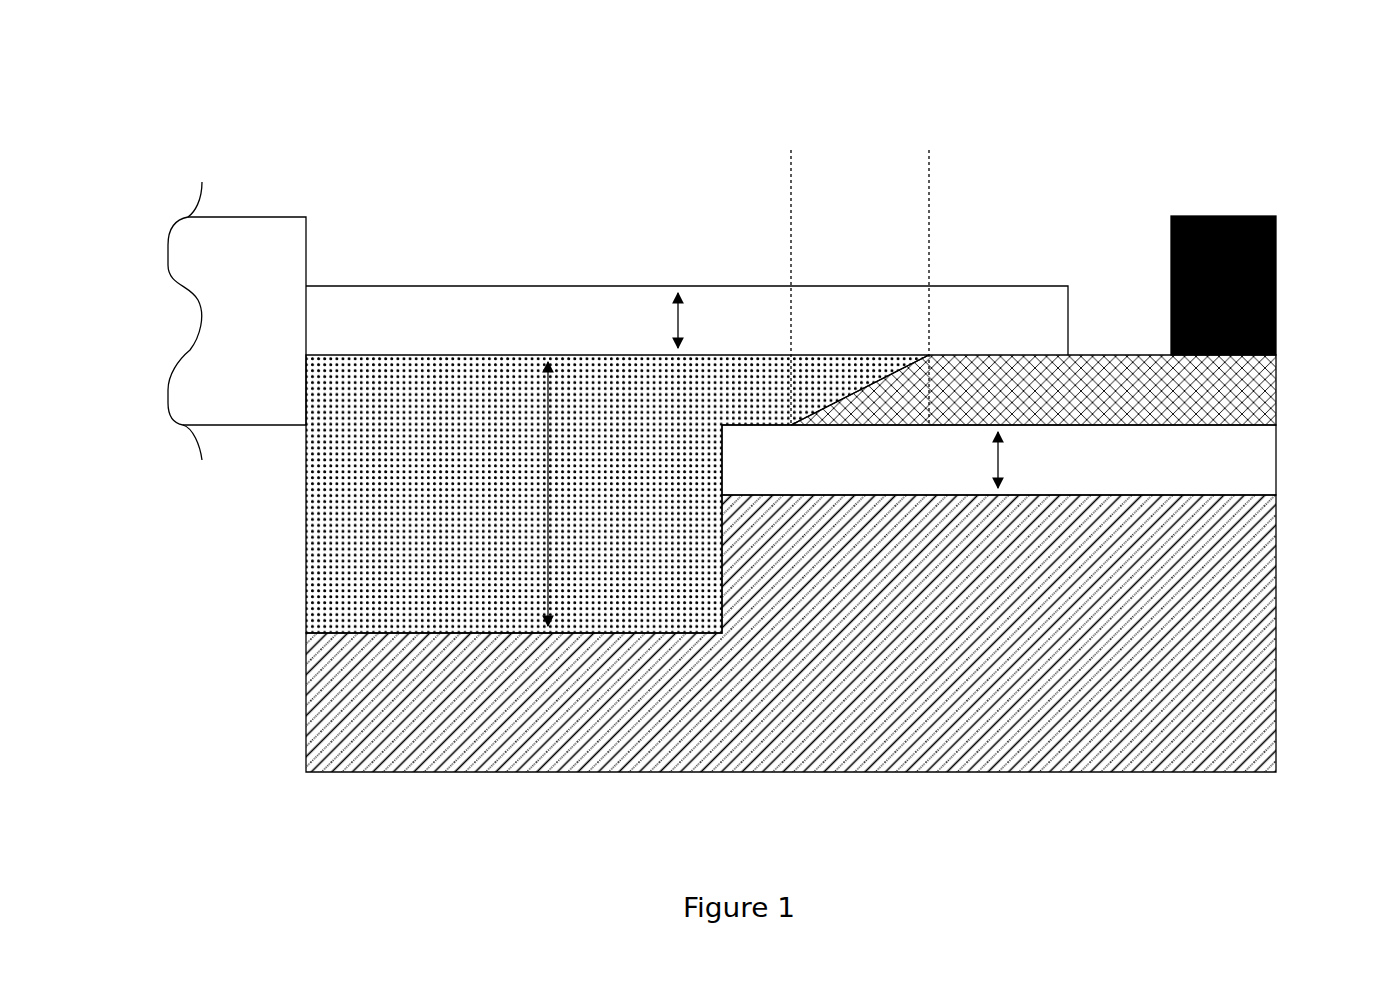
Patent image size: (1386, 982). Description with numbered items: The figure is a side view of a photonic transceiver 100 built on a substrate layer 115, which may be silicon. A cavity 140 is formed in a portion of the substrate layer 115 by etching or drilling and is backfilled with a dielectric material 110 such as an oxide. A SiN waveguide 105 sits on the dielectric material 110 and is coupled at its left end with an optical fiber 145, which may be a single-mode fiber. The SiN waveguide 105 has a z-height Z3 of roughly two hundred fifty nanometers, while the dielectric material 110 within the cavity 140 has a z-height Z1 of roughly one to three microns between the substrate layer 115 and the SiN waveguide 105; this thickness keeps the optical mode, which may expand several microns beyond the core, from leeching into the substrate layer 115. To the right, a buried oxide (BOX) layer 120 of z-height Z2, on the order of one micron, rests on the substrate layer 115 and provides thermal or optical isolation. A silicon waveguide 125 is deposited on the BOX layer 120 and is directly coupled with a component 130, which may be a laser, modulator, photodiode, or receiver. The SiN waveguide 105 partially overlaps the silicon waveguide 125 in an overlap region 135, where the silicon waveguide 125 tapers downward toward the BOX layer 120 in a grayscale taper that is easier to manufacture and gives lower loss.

The transceiver 100 is at (372, 106).
The SiN waveguide 105 is at (548, 323).
The dielectric material 110 is at (342, 563).
The substrate layer 115 is at (1032, 737).
The buried oxide (BOX) layer 120 is at (1240, 460).
The silicon waveguide 125 is at (1222, 390).
The component 130 is at (1227, 215).
The overlap region 135 is at (834, 118).
The cavity 140 is at (446, 452).
The optical fiber 145 is at (238, 253).
The z-height of dielectric layer Z1 is at (526, 554).
The z-height of BOX layer Z2 is at (976, 474).
The z-height of SiN waveguide Z3 is at (721, 334).